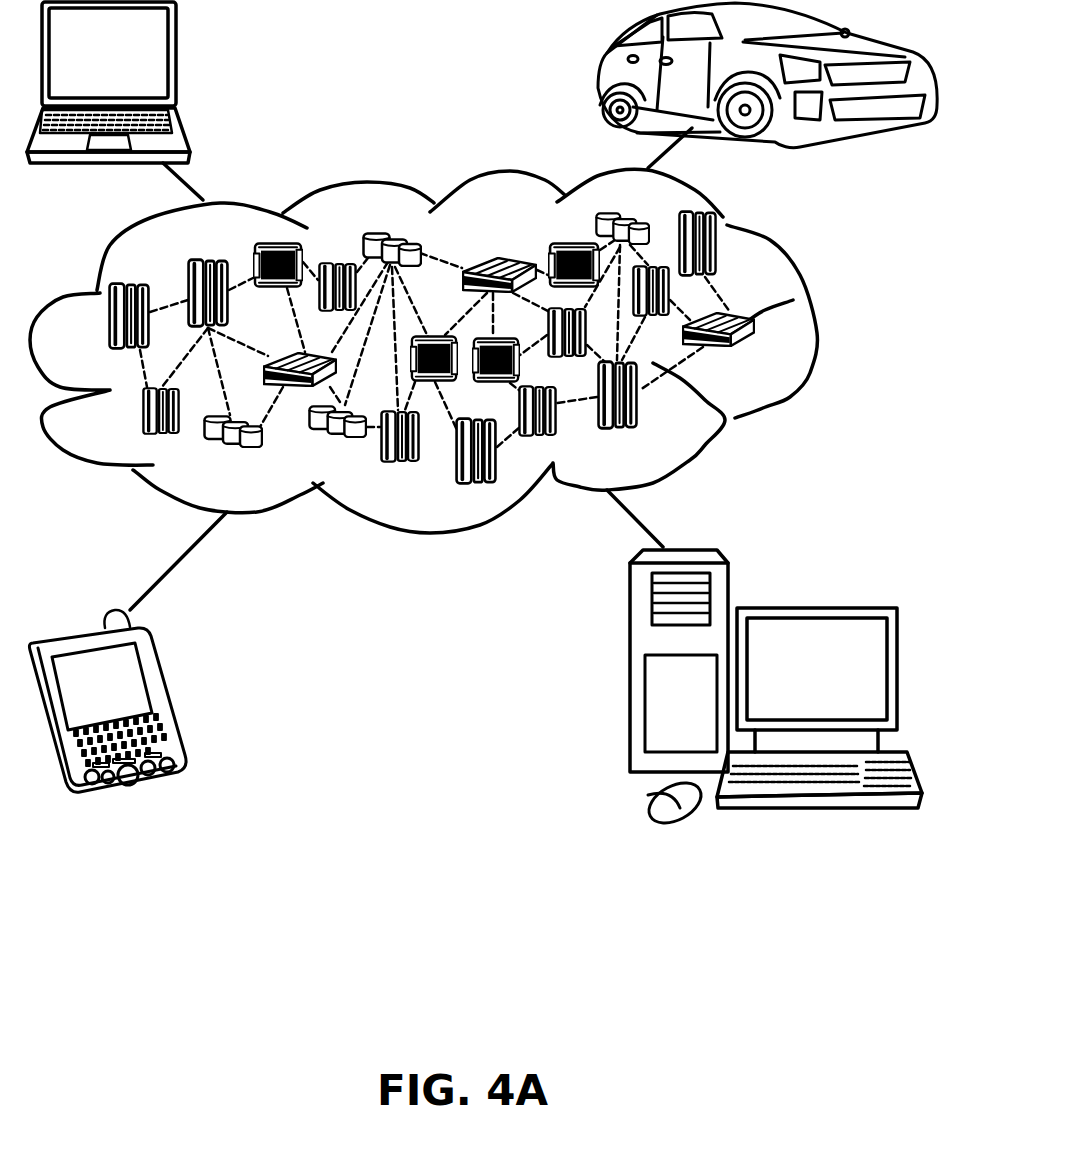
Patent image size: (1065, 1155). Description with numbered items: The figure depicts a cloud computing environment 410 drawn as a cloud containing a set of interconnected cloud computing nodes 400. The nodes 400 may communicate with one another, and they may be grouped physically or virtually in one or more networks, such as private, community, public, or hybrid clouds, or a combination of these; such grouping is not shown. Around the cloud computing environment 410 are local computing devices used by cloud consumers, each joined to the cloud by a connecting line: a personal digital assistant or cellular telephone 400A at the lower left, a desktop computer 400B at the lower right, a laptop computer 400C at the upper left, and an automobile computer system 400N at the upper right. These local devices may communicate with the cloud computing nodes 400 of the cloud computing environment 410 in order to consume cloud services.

The cloud computing nodes 400 is at (765, 356).
The cloud computing environment 410 is at (815, 323).
The personal digital assistant (PDA) or cellular telephone 400A is at (165, 693).
The desktop computer 400B is at (813, 605).
The laptop computer 400C is at (177, 62).
The automobile computer system 400N is at (600, 78).